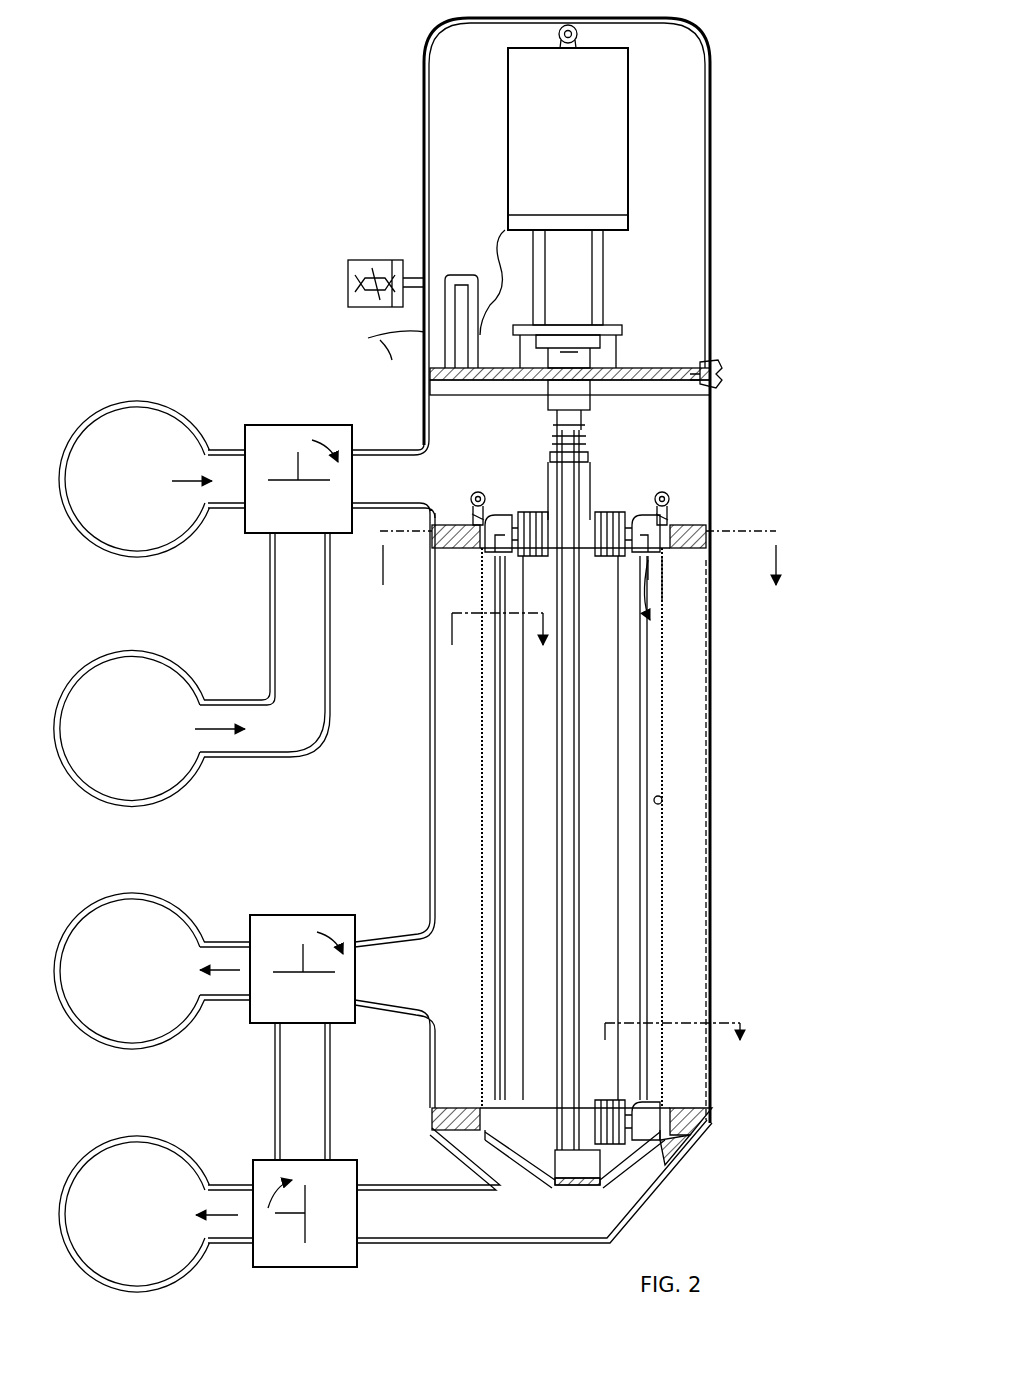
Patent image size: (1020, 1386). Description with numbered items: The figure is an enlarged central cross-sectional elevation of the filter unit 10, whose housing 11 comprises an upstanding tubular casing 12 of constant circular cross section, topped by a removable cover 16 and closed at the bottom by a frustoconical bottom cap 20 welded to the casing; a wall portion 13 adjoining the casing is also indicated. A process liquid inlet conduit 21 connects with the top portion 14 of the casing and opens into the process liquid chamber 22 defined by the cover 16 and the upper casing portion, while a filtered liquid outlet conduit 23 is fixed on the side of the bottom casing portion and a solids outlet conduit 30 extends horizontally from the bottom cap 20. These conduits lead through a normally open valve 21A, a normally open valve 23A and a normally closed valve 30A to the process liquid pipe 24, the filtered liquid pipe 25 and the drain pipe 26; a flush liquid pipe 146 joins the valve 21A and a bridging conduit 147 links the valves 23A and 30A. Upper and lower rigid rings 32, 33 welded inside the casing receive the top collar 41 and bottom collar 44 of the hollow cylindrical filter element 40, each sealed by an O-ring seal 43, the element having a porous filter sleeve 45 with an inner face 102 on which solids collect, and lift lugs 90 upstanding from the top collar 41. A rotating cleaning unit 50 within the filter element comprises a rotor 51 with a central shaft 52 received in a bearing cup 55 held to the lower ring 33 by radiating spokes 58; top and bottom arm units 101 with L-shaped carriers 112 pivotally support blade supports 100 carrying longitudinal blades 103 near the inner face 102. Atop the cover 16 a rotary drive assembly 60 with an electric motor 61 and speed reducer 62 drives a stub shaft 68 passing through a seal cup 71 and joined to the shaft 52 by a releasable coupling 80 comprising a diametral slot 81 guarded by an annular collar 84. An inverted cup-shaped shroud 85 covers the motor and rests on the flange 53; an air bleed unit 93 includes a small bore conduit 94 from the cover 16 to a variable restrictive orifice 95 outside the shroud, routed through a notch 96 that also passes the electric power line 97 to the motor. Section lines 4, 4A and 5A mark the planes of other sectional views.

The filter unit 10 is at (748, 147).
The housing 11 is at (722, 466).
The tubular casing 12 is at (715, 708).
The housing inner wall 13 is at (712, 752).
The top portion of the casing 14 is at (712, 492).
The removable cover 16 is at (500, 368).
The frustoconical bottom cap 20 is at (648, 1200).
The process liquid inlet conduit 21 is at (392, 452).
The normally open valve 21A is at (252, 540).
The process liquid chamber 22 is at (712, 520).
The filtered liquid outlet conduit 23 is at (388, 938).
The normally open valve 23A is at (255, 1026).
The process liquid pipe 24 is at (100, 410).
The filtered liquid pipe 25 is at (78, 918).
The drain pipe 26 is at (88, 1165).
The outlet conduit for solids 30 is at (392, 1248).
The valve 30A is at (262, 1270).
The upper rigid ring 32 is at (700, 540).
The lower rigid ring 33 is at (700, 1140).
The filter element 40 is at (668, 842).
The top collar 41 is at (680, 565).
The annular seal 43 is at (705, 1128).
The bottom collar 44 is at (672, 1098).
The filter sleeve 45 is at (665, 945).
The rotating cleaning unit 50 is at (498, 510).
The rotor 51 is at (490, 512).
The central shaft 52 is at (560, 778).
The flange 53 is at (712, 400).
The bearing cup 55 is at (578, 1185).
The radiating spokes 58 is at (518, 1178).
The rotary drive assembly 60 is at (652, 86).
The electric rotate motor 61 is at (568, 127).
The speed reducer unit 62 is at (600, 278).
The stub shaft 68 is at (557, 418).
The seal cup 71 is at (548, 392).
The axially slidably releasable coupling 80 is at (550, 456).
The diametral slot 81 is at (557, 487).
The annular collar 84 is at (552, 440).
The shroud 85 is at (710, 108).
The lift lugs 90 is at (470, 500).
The air bleed unit 93 is at (332, 250).
The small bore conduit 94 is at (478, 332).
The variable restrictive orifice 95 is at (388, 262).
The downward opening notch 96 is at (460, 280).
The electric power line 97 is at (396, 352).
The blade support 100 is at (645, 860).
The arm units 101 is at (632, 590).
The inner face 102 is at (662, 806).
The blades 103 is at (658, 895).
The L-shaped carrier 112 is at (652, 505).
The flush liquid pipe 146 is at (80, 672).
The bridging conduit 147 is at (275, 1098).
The section line 4 is at (575, 580).
The section line 4A is at (673, 1045).
The section line 5A is at (497, 645).